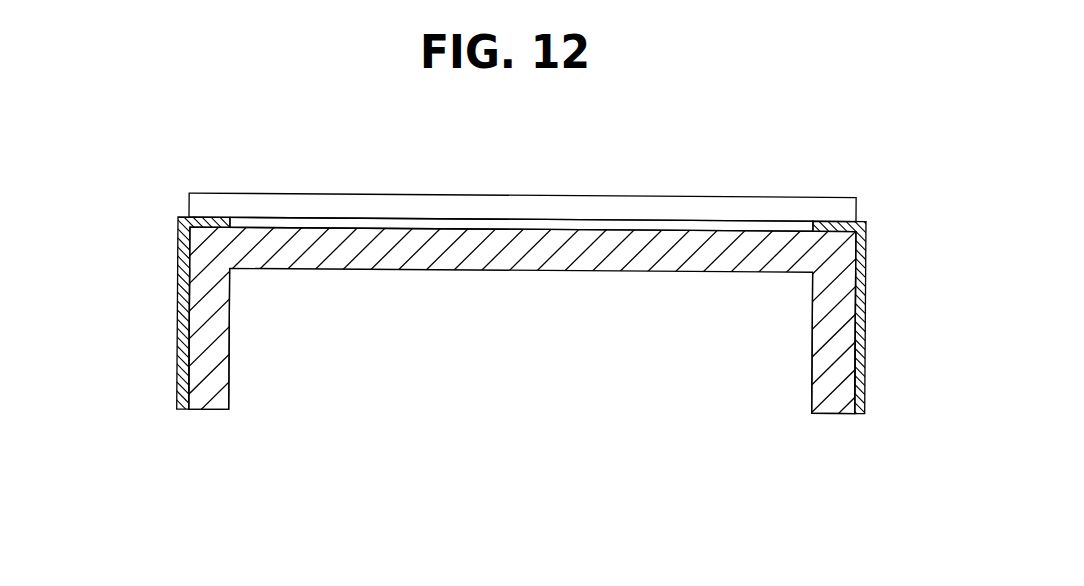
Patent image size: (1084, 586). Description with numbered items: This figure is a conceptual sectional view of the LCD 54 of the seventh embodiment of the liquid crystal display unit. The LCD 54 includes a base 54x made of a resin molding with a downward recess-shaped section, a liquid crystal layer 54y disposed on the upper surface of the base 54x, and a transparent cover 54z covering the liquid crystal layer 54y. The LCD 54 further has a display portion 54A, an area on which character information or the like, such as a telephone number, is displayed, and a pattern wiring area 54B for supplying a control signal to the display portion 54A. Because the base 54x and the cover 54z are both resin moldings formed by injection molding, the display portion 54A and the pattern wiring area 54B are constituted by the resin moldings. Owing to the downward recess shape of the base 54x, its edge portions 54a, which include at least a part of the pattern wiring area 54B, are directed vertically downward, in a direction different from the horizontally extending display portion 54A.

The LCD 54 is at (721, 168).
The display portion 54A is at (594, 185).
The pattern wiring area 54B is at (169, 244).
The base 54x is at (538, 252).
The liquid crystal layer 54y is at (420, 230).
The transparent cover 54z is at (299, 194).
The edge portions 54a is at (210, 385).